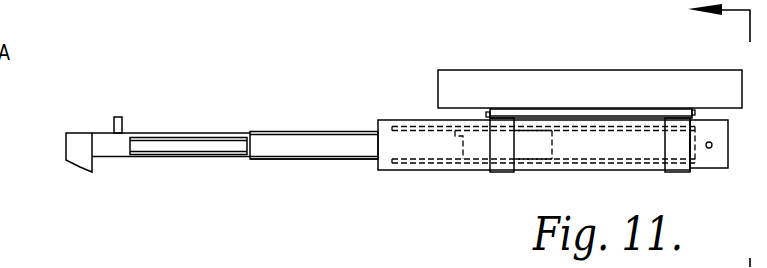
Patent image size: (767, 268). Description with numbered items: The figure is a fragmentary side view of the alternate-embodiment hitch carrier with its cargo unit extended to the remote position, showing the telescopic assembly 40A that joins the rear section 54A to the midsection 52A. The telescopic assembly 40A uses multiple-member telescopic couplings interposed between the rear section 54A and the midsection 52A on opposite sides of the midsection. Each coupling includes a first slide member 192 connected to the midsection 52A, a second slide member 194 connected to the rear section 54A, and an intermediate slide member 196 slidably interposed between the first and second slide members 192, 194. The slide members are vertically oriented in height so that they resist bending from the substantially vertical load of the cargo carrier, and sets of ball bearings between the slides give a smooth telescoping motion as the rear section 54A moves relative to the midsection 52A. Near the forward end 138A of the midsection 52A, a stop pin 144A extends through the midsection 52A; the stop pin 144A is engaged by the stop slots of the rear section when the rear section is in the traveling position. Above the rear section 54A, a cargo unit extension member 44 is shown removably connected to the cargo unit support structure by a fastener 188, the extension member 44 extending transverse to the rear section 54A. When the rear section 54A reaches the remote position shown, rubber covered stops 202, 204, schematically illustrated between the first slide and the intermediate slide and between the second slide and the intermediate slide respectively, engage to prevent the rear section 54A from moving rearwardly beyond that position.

The telescopic assembly 40A is at (372, 90).
The cargo unit extension member 44 is at (540, 113).
The midsection 52A is at (107, 153).
The rear section 54A is at (717, 158).
The forward end of the midsection 138A is at (93, 143).
The stop pin 144A is at (117, 116).
The fastener 188 is at (701, 88).
The first slide member 192 is at (165, 138).
The second slide member 194 is at (549, 143).
The intermediate slide member 196 is at (305, 148).
The rubber covered stop 202 is at (257, 140).
The rubber covered stop 204 is at (445, 152).